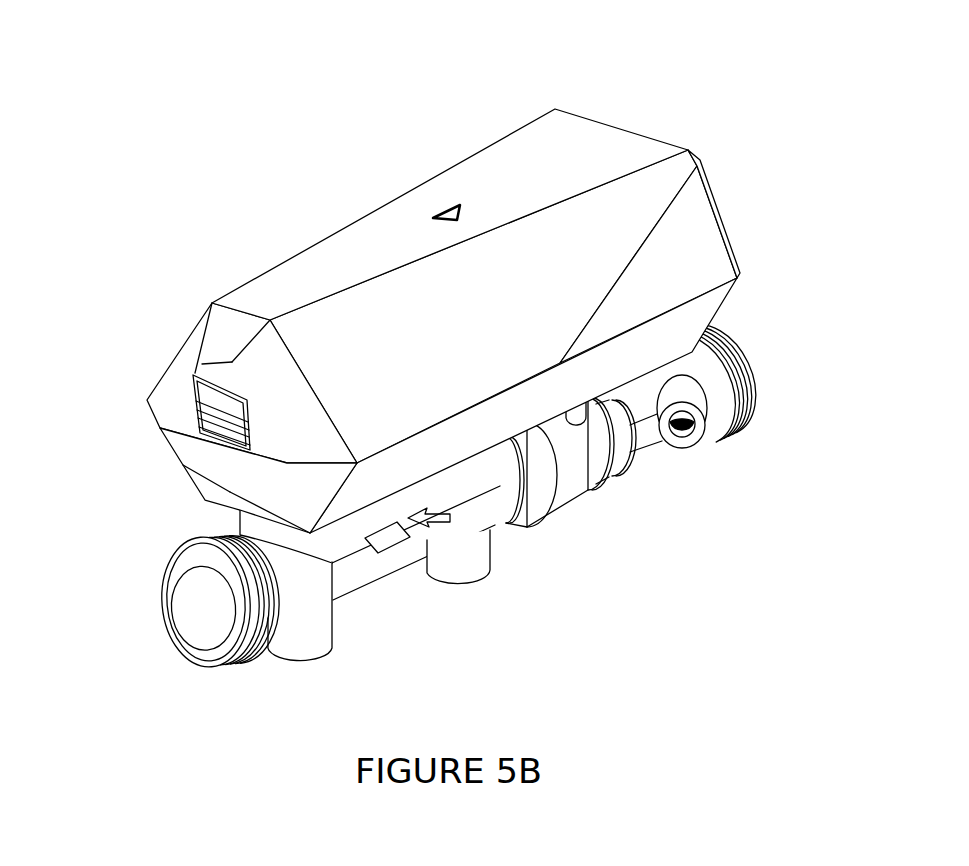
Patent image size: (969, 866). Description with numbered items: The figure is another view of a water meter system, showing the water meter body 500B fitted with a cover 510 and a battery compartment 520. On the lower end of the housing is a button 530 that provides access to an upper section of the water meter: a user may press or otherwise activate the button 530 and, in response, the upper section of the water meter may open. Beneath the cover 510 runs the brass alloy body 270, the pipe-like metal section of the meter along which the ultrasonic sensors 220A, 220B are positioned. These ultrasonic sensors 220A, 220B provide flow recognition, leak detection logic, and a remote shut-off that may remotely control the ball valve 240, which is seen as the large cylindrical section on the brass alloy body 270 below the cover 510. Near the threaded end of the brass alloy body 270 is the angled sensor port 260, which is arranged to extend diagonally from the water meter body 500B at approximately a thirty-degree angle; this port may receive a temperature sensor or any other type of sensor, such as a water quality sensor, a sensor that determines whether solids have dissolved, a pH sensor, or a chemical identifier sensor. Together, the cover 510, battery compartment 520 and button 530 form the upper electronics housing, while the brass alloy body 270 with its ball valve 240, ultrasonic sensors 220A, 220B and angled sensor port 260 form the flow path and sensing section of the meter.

The water meter body 500B is at (453, 364).
The cover 510 is at (453, 341).
The battery compartment 520 is at (513, 130).
The button 530 is at (211, 444).
The brass alloy body 270 is at (690, 375).
The angled sensor port 260 is at (719, 462).
The ball valve 240 is at (582, 506).
The ultrasonic sensor 220A is at (470, 595).
The ultrasonic sensor 220B is at (306, 669).